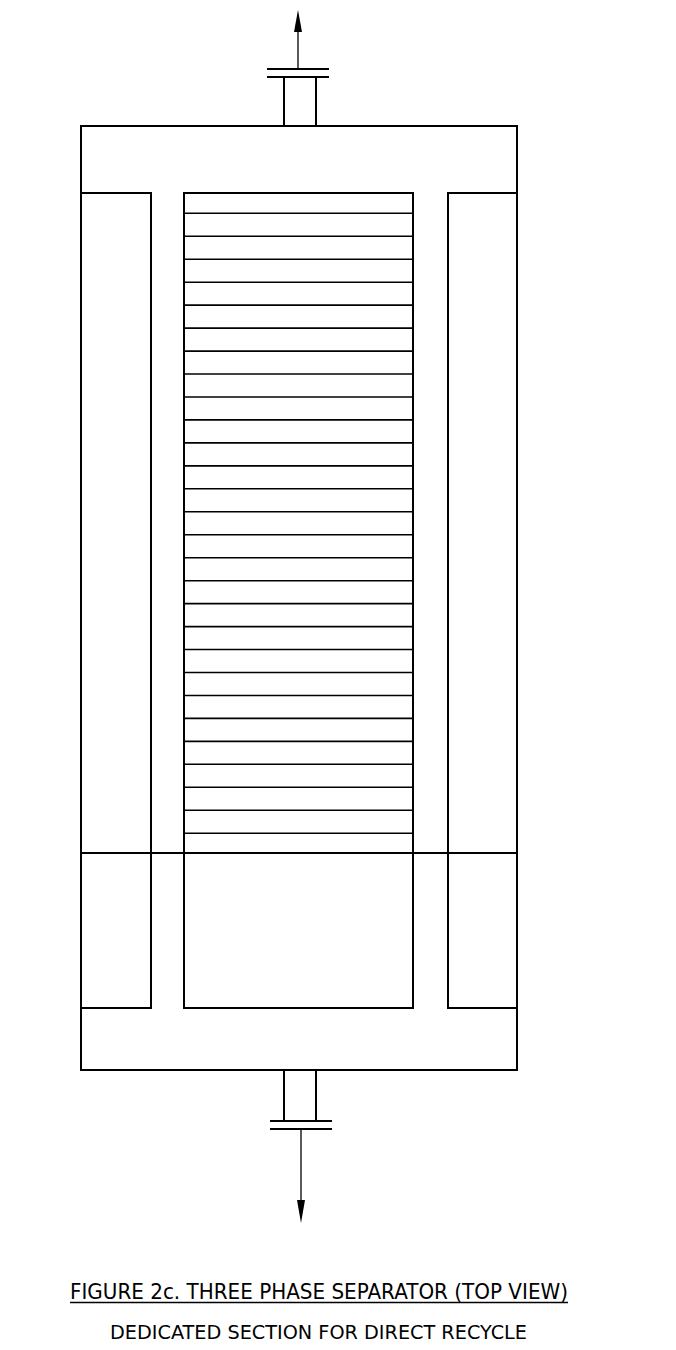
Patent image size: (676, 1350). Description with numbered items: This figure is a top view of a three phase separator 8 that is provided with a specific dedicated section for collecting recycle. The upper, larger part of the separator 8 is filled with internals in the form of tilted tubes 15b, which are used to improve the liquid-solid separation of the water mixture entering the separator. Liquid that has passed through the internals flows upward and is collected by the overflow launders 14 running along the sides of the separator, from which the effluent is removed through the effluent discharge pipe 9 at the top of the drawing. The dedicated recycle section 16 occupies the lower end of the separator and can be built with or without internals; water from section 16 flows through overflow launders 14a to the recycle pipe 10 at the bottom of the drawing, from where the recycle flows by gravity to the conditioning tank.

The three-phase separator 8 is at (271, 598).
The effluent discharge pipe 9 is at (314, 66).
The recycle pipe 10 is at (314, 1146).
The overflow launders 14 is at (482, 523).
The overflow launders 14a is at (482, 930).
The tilted tubes 15b is at (388, 523).
The dedicated section for collecting recycle 16 is at (298, 930).